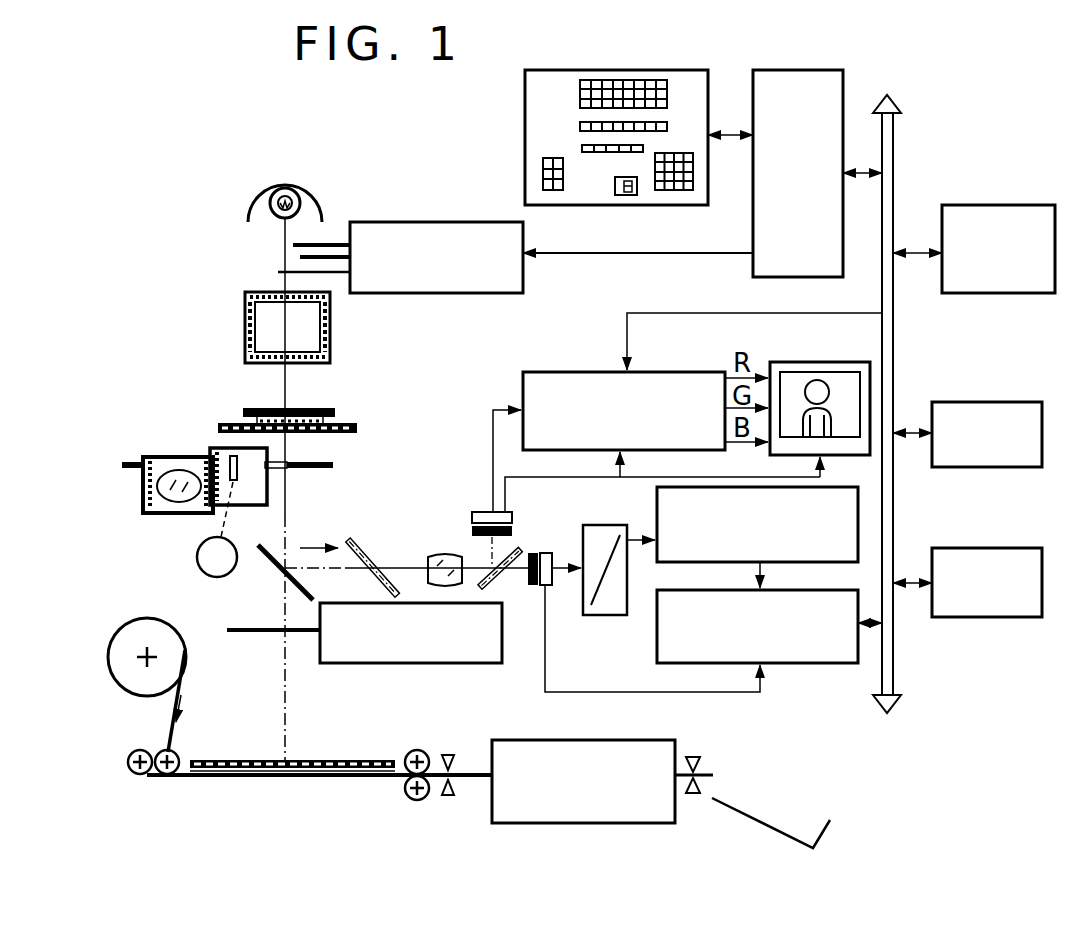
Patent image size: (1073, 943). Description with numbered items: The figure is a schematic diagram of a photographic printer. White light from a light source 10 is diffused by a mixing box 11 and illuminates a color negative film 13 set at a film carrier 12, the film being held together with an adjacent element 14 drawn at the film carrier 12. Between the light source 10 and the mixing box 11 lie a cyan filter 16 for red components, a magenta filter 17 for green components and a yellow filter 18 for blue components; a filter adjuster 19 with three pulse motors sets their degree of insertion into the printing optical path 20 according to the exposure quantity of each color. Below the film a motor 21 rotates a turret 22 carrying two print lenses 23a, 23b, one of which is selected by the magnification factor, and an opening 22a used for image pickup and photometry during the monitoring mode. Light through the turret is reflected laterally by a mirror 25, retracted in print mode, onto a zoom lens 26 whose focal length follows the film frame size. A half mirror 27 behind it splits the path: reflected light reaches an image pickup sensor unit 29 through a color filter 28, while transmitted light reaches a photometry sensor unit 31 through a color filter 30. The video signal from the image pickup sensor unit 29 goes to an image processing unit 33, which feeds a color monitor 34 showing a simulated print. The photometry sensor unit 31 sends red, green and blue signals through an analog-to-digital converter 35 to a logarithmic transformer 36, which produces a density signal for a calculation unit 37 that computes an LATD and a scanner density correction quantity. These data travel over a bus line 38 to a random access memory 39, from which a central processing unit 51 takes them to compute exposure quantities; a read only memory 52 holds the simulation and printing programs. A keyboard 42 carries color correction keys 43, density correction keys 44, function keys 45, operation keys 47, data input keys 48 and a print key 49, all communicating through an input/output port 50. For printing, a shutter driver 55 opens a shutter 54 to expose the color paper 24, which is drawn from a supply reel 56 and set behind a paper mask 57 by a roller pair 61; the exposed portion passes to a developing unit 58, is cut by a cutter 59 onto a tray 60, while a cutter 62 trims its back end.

The light source 10 is at (272, 198).
The mixing box 11 is at (245, 323).
The film carrier 12 is at (230, 426).
The color negative film 13 is at (322, 408).
The film mask 14 is at (250, 408).
The cyan filter 16 is at (330, 242).
The magenta filter 17 is at (300, 252).
The yellow filter 18 is at (333, 275).
The filter adjuster 19 is at (425, 222).
The printing optical path 20 is at (288, 688).
The motor 21 is at (197, 557).
The turret 22 is at (125, 462).
The opening 22a is at (336, 463).
The print lens 23a is at (145, 486).
The print lens 23b is at (215, 451).
The color paper 24 is at (253, 777).
The mirror 25 is at (275, 562).
The zoom lens 26 is at (442, 553).
The half mirror 27 is at (518, 554).
The color filter 28 is at (513, 525).
The image pickup sensor unit 29 is at (491, 505).
The color filter 30 is at (533, 587).
The photometry sensor unit 31 is at (553, 586).
The image processing unit 33 is at (597, 372).
The color monitor 34 is at (828, 362).
The analog-to-digital converter 35 is at (610, 616).
The logarithmic transformer 36 is at (657, 503).
The calculation unit 37 is at (820, 664).
The bus line 38 is at (895, 664).
The random access memory 39 is at (1012, 617).
The keyboard 42 is at (687, 78).
The color correction keys 43 is at (582, 82).
The density correction keys 44 is at (667, 127).
The function keys 45 is at (582, 148).
The operation keys 47 is at (543, 190).
The data input keys 48 is at (685, 190).
The print key 49 is at (622, 196).
The input/output port 50 is at (797, 70).
The central processing unit 51 is at (975, 205).
The read only memory 52 is at (960, 402).
The shutter 54 is at (233, 635).
The shutter driver 55 is at (466, 664).
The supply reel 56 is at (125, 683).
The paper mask 57 is at (362, 758).
The developing unit 58 is at (633, 823).
The cutter 59 is at (692, 755).
The tray 60 is at (745, 816).
The roller pair 61 is at (137, 777).
The cutter 62 is at (448, 797).